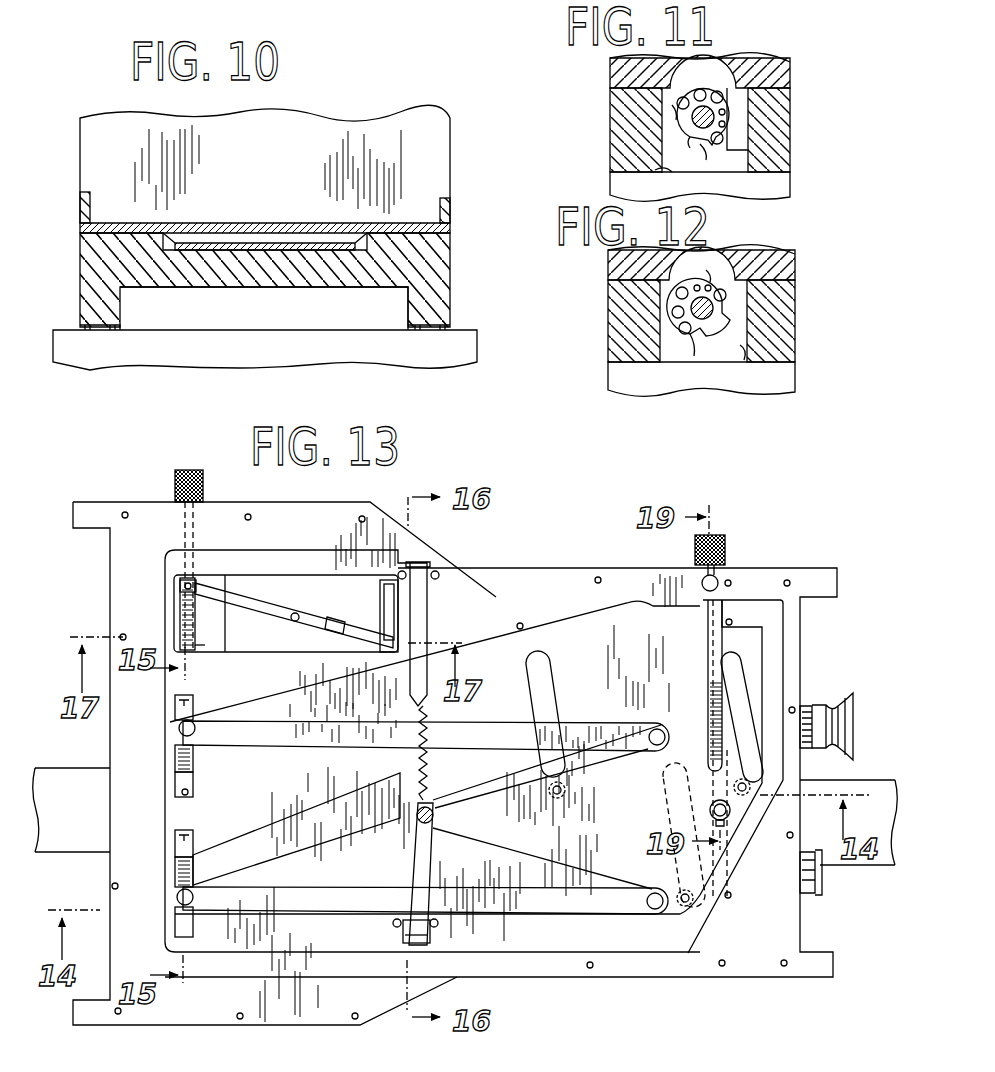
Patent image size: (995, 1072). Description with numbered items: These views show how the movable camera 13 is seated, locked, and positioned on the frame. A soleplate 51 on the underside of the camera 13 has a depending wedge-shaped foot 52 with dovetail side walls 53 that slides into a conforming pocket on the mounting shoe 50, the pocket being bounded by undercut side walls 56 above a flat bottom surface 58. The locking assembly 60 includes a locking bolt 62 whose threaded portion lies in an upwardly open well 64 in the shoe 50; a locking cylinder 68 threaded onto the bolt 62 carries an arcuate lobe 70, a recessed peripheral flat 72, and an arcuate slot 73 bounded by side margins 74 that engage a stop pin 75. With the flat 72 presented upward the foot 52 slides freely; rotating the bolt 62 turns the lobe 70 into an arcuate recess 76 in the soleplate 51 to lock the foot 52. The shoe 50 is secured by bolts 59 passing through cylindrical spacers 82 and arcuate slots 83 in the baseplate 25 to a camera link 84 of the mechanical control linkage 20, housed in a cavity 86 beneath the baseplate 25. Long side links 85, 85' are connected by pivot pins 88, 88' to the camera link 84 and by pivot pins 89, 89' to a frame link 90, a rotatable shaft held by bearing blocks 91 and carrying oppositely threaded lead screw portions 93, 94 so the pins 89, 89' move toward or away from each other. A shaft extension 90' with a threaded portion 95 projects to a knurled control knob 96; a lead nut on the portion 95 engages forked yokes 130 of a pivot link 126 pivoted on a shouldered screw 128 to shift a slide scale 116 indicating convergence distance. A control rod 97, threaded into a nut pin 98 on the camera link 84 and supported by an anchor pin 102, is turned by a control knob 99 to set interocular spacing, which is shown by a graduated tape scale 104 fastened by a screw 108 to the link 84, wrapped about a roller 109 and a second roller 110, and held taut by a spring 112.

In FIG. 10, the movable camera 13 is at (372, 118).
In FIG. 10, the soleplate 51 is at (452, 211).
In FIG. 11, the soleplate 51 is at (610, 75).
In FIG. 12, the soleplate 51 is at (776, 263).
In FIG. 10, the side walls 53 is at (188, 240).
In FIG. 10, the foot 52 is at (246, 243).
In FIG. 10, the side walls 56 is at (366, 238).
In FIG. 10, the mounting shoe 50 is at (452, 283).
In FIG. 11, the mounting shoe 50 is at (782, 135).
In FIG. 12, the mounting shoe 50 is at (612, 345).
In FIG. 10, the bottom surface 58 is at (279, 250).
In FIG. 10, the cylindrical spacers 82 is at (120, 328).
In FIG. 10, the baseplate 25 is at (460, 341).
In FIG. 11, the baseplate 25 is at (790, 188).
In FIG. 12, the baseplate 25 is at (648, 393).
In FIG. 13, the baseplate 25 is at (335, 1026).
In FIG. 11, the arcuate lobe 70 is at (715, 90).
In FIG. 12, the arcuate lobe 70 is at (675, 341).
In FIG. 11, the locking assembly 60 is at (748, 77).
In FIG. 12, the locking assembly 60 is at (750, 294).
In FIG. 11, the peripheral flat 72 is at (766, 101).
In FIG. 12, the peripheral flat 72 is at (690, 280).
In FIG. 11, the side margins 74 is at (678, 119).
In FIG. 11, the arcuate slot 73 is at (688, 137).
In FIG. 12, the arcuate slot 73 is at (740, 353).
In FIG. 11, the well 64 is at (655, 183).
In FIG. 12, the well 64 is at (756, 366).
In FIG. 11, the stop pin 75 is at (705, 153).
In FIG. 12, the stop pin 75 is at (695, 339).
In FIG. 12, the arcuate recess 76 is at (712, 277).
In FIG. 12, the locking cylinder 68 is at (678, 313).
In FIG. 12, the locking bolt 62 is at (716, 315).
In FIG. 13, the control knob 96 is at (186, 470).
In FIG. 13, the forked yokes 130 is at (190, 583).
In FIG. 13, the slide scale 116 is at (380, 600).
In FIG. 13, the shouldered screw 128 is at (300, 601).
In FIG. 13, the pivot link 126 is at (342, 612).
In FIG. 13, the threaded portion 95 is at (180, 613).
In FIG. 13, the shaft extension 90' is at (233, 645).
In FIG. 13, the shaft bearing blocks 91 is at (176, 708).
In FIG. 13, the pivot pin 89 is at (208, 708).
In FIG. 13, the side links 85 is at (426, 721).
In FIG. 13, the lower arm 85' is at (425, 915).
In FIG. 13, the lead screw portion 93 is at (176, 753).
In FIG. 13, the frame link 90 is at (206, 789).
In FIG. 13, the lead screw portion 94 is at (176, 889).
In FIG. 13, the pivot pin 89' is at (218, 883).
In FIG. 13, the mechanical control linkage 20 is at (310, 905).
In FIG. 13, the second roller 110 is at (440, 570).
In FIG. 13, the cavity 86 is at (540, 597).
In FIG. 13, the control knob 99 is at (727, 553).
In FIG. 13, the anchor pin 102 is at (720, 581).
In FIG. 13, the control rod 97 is at (713, 643).
In FIG. 13, the slots 83 is at (562, 703).
In FIG. 13, the pivot pin 88 is at (672, 713).
In FIG. 13, the pivot pin 88' is at (666, 919).
In FIG. 13, the spring 112 is at (428, 767).
In FIG. 13, the screw 108 is at (433, 816).
In FIG. 13, the bolts 59 is at (551, 795).
In FIG. 13, the nut pin 98 is at (708, 812).
In FIG. 13, the camera link 84 is at (479, 835).
In FIG. 13, the tape scale 104 is at (412, 859).
In FIG. 13, the roller 109 is at (402, 932).